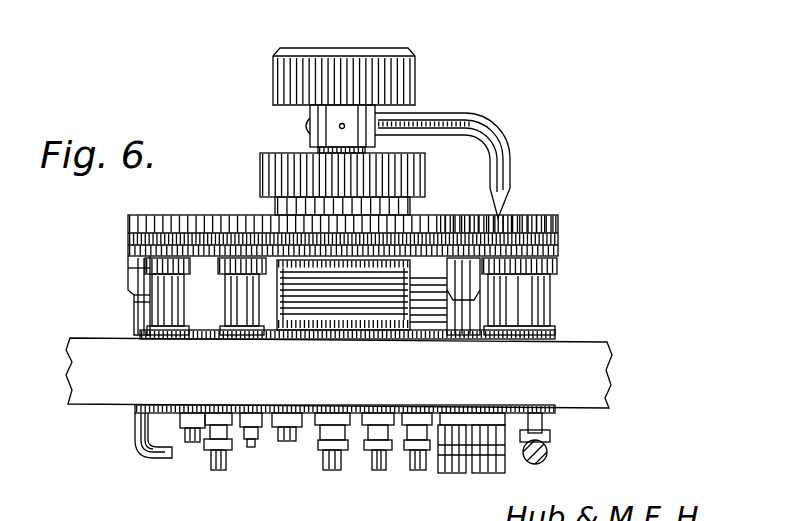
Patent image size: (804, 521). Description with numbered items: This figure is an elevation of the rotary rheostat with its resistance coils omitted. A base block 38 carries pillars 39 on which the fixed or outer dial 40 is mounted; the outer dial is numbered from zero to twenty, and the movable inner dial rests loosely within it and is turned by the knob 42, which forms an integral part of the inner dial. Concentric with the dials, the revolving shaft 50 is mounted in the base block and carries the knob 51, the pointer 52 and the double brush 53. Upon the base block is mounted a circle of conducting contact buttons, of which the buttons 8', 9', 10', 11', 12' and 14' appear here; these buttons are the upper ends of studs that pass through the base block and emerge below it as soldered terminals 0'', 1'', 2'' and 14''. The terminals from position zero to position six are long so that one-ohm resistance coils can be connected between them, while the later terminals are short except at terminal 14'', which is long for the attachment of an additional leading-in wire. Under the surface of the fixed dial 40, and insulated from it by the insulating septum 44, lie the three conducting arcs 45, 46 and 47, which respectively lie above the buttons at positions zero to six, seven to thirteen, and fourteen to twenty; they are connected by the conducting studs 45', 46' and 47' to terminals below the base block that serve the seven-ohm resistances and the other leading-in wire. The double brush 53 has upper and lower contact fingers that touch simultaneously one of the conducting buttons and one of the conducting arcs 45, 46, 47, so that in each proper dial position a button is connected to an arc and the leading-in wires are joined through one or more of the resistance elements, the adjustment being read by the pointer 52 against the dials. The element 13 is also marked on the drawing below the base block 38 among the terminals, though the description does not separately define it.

The knob 51 is at (372, 52).
The revolving shaft 50 is at (322, 150).
The pointer 52 is at (425, 128).
The knob 42 is at (398, 186).
The fixed or outer dial 40 is at (379, 232).
The conducting arc 46 is at (343, 214).
The conducting stud 46' is at (494, 209).
The insulating septum 44 is at (560, 243).
The conducting arc 45 is at (375, 270).
The conducting arc 47 is at (106, 283).
The conducting stud 47' is at (120, 388).
The pillars 39 is at (545, 295).
The double brush 53 is at (480, 322).
The base block 38 is at (368, 372).
The contact button 14' is at (202, 355).
The contact button 12' is at (284, 355).
The contact button 11' is at (334, 355).
The contact button 10' is at (380, 355).
The contact button 9' is at (425, 355).
The contact button 8' is at (454, 355).
The soldered terminal 14'' is at (204, 458).
The plunger 13 is at (251, 450).
The soldered terminal 0'' is at (335, 460).
The soldered terminal 1'' is at (383, 460).
The soldered terminal 2'' is at (424, 460).
The conducting stud 45' is at (558, 443).